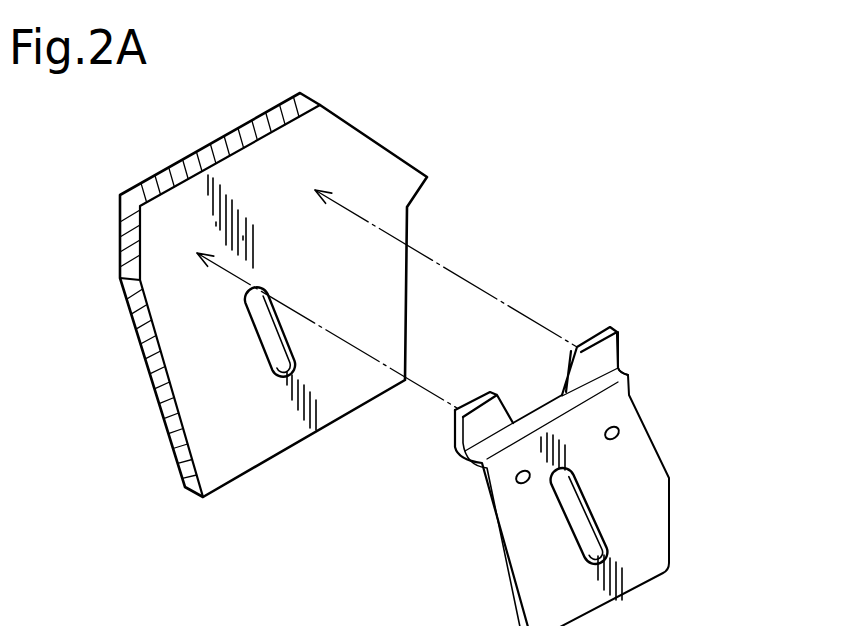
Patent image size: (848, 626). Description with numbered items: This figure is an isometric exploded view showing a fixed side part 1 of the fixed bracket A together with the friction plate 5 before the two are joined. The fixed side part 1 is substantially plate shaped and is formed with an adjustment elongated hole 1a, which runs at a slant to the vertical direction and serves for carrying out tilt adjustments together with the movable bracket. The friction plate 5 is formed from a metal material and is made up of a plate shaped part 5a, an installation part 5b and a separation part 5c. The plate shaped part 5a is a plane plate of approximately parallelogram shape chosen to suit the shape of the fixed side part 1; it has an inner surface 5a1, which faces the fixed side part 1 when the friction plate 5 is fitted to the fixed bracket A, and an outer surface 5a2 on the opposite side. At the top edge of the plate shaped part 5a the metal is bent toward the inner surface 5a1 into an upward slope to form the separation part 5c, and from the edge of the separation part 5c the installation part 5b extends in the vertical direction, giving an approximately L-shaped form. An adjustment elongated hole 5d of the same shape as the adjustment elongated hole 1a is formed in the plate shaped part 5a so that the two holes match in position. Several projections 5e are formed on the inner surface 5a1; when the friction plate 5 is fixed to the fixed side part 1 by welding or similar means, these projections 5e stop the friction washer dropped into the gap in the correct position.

The fixed bracket A is at (382, 135).
The fixed side part 1 is at (348, 295).
The adjustment elongated hole 1a is at (277, 360).
The friction plate 5 is at (566, 454).
The plate shaped part 5a is at (640, 518).
The inner surface 5a1 is at (550, 610).
The outer surface 5a2 is at (640, 553).
The installation part 5b is at (455, 432).
The separation part 5c is at (622, 372).
The adjustment elongated hole 5d is at (577, 520).
The projection 5e is at (625, 433).